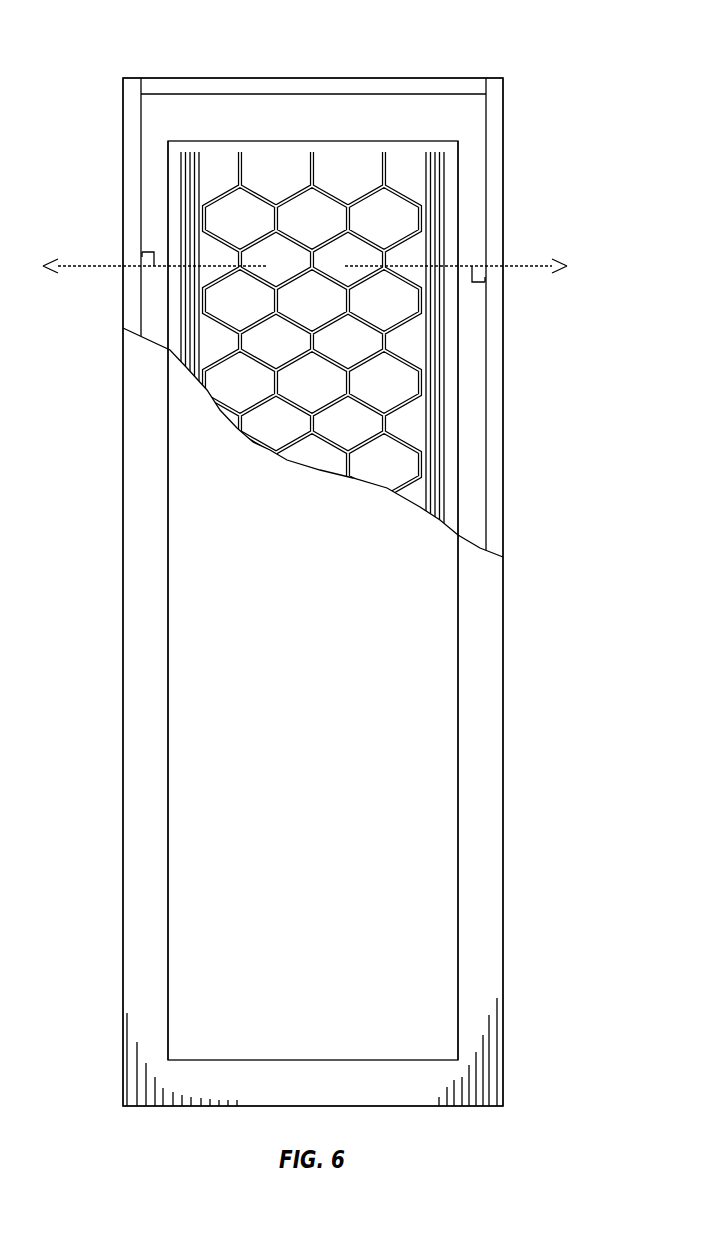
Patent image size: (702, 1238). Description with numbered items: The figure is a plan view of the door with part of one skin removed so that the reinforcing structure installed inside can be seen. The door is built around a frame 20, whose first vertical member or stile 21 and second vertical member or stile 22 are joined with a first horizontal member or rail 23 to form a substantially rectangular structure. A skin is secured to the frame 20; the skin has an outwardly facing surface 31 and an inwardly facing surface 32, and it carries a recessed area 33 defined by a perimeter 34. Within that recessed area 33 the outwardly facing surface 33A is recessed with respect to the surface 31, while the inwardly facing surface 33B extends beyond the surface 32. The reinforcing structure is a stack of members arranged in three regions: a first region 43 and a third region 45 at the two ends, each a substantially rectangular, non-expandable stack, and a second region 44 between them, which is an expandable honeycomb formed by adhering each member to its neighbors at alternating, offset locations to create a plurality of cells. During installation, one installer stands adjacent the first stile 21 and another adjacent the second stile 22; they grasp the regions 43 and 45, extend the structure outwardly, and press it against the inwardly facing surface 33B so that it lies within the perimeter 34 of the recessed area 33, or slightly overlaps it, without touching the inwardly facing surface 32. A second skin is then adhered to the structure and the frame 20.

The frame 20 is at (115, 66).
The first vertical member or stile 21 is at (495, 367).
The second vertical member or stile 22 is at (133, 132).
The first horizontal member or rail 23 is at (165, 85).
The first or outwardly facing surface 31 is at (475, 977).
The second or inwardly facing surface 32 is at (433, 117).
The recessed area 33 is at (402, 883).
The first or outwardly facing surface of recessed area 33A is at (331, 792).
The second or inwardly facing surface of recessed area 33B is at (447, 182).
The perimeter 34 is at (458, 710).
The first region 43 is at (195, 222).
The second region 44 is at (410, 135).
The third region 45 is at (440, 263).